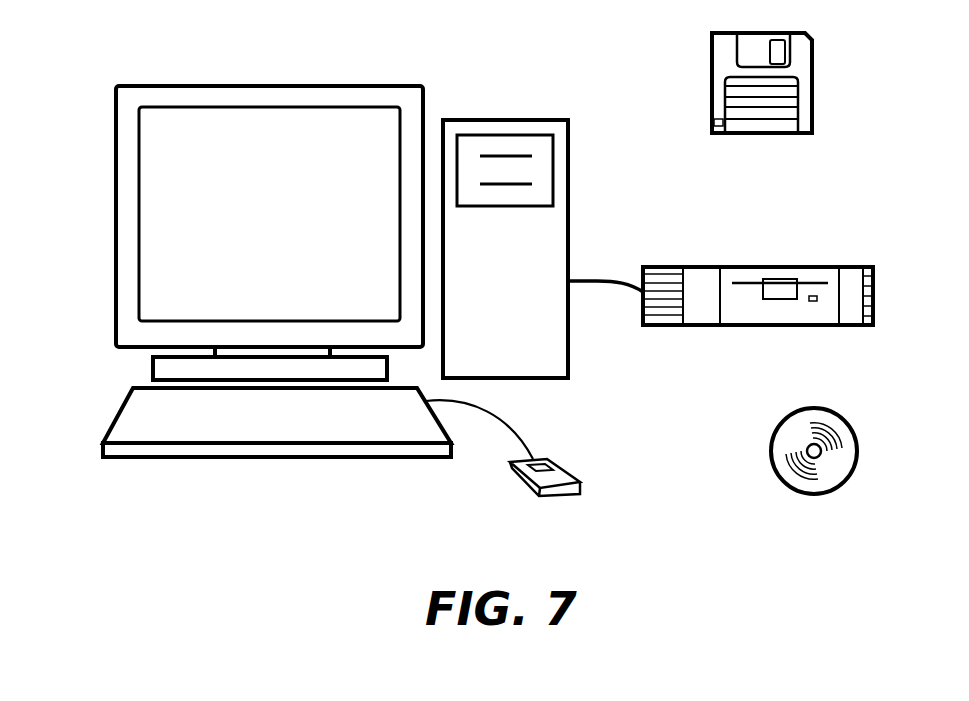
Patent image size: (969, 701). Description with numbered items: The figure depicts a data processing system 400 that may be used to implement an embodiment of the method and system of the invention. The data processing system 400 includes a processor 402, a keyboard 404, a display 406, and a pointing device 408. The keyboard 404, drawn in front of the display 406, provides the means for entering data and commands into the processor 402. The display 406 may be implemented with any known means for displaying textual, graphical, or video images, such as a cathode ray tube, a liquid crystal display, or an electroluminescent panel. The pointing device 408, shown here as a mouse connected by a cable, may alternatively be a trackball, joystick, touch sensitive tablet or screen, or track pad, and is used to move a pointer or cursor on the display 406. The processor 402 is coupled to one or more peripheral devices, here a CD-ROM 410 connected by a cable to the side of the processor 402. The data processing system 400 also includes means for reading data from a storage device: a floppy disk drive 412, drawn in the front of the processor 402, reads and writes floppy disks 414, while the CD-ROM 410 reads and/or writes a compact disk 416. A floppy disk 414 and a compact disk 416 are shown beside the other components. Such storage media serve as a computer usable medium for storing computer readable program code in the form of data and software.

The data processing system 400 is at (102, 73).
The processor 402 is at (485, 120).
The keyboard 404 is at (133, 390).
The display 406 is at (361, 85).
The pointing device 408 is at (560, 462).
The CD-ROM 410 is at (797, 266).
The floppy disk drive 412 is at (550, 133).
The floppy disk 414 is at (746, 33).
The compact disk 416 is at (800, 410).